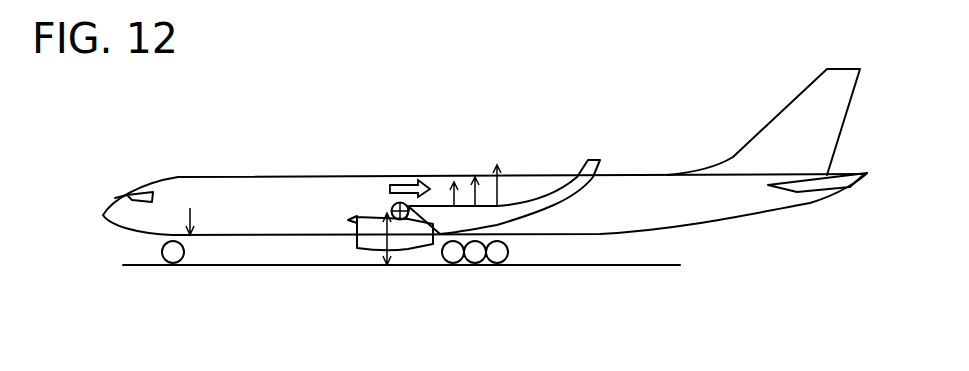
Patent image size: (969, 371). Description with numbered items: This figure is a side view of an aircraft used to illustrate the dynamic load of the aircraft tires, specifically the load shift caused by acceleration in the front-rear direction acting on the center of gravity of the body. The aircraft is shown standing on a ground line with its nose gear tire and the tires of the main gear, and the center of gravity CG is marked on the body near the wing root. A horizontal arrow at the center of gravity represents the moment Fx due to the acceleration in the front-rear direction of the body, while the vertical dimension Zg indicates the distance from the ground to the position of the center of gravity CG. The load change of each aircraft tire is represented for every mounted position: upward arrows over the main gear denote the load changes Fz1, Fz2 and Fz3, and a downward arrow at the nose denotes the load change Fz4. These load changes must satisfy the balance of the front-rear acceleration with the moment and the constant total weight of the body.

The center of gravity CG is at (401, 219).
The moment due to the acceleration in the front-rear direction Fx is at (396, 190).
The load change of the aircraft tire at mounted position one Fz1 is at (437, 174).
The load change of the aircraft tire at mounted position two Fz2 is at (465, 160).
The load change of the aircraft tire at mounted position three Fz3 is at (493, 146).
The load change of the aircraft tire at mounted position four Fz4 is at (216, 220).
The distance from the ground to the center of gravity Zg is at (375, 239).